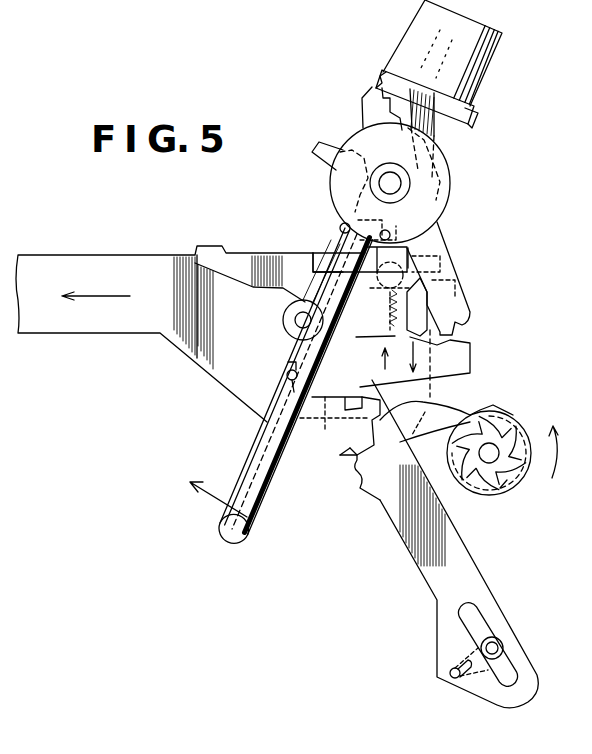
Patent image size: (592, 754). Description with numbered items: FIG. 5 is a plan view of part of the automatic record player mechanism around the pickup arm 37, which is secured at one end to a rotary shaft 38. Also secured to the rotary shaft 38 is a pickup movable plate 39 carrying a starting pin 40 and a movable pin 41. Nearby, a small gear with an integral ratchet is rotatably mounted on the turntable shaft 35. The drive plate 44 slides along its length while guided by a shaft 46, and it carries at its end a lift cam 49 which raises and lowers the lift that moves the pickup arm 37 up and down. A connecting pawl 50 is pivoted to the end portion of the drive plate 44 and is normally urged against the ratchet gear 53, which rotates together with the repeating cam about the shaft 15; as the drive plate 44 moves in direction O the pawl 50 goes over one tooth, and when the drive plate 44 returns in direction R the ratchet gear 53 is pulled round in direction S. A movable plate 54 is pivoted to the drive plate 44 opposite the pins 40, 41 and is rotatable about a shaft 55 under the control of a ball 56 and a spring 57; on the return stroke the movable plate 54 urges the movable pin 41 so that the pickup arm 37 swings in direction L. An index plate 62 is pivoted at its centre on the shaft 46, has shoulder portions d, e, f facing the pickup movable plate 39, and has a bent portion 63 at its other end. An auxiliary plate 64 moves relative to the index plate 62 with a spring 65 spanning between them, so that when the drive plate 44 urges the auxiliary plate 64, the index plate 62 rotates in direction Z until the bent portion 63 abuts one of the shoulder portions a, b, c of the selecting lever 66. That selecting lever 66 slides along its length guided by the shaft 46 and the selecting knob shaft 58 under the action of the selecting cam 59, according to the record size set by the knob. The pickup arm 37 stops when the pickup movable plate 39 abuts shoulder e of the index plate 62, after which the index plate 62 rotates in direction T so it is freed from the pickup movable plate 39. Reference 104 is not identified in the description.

The turntable shaft 35 is at (243, 0).
The plunger 104 is at (256, 0).
The rotary shaft 38 is at (388, 172).
The starting pin 40 is at (342, 225).
The movable pin 41 is at (388, 234).
The drive plate 44 is at (133, 258).
The lift cam 49 is at (314, 256).
The movable plate 54 is at (410, 248).
The ball 56 is at (430, 288).
The pickup movable plate 39 is at (470, 318).
The spring 57 is at (330, 279).
The shaft 55 is at (384, 296).
The shaft 46 is at (286, 328).
The spring 65 is at (283, 372).
The index plate 62 is at (470, 352).
The auxiliary plate 64 is at (338, 439).
The bent portion 63 is at (350, 474).
The pickup arm 37 is at (268, 511).
The selecting lever 66 is at (462, 556).
The selecting knob shaft 58 is at (500, 642).
The selecting cam 59 is at (463, 652).
The shaft 15 is at (497, 445).
The ratchet gear 53 is at (512, 486).
The connecting pawl 50 is at (425, 430).